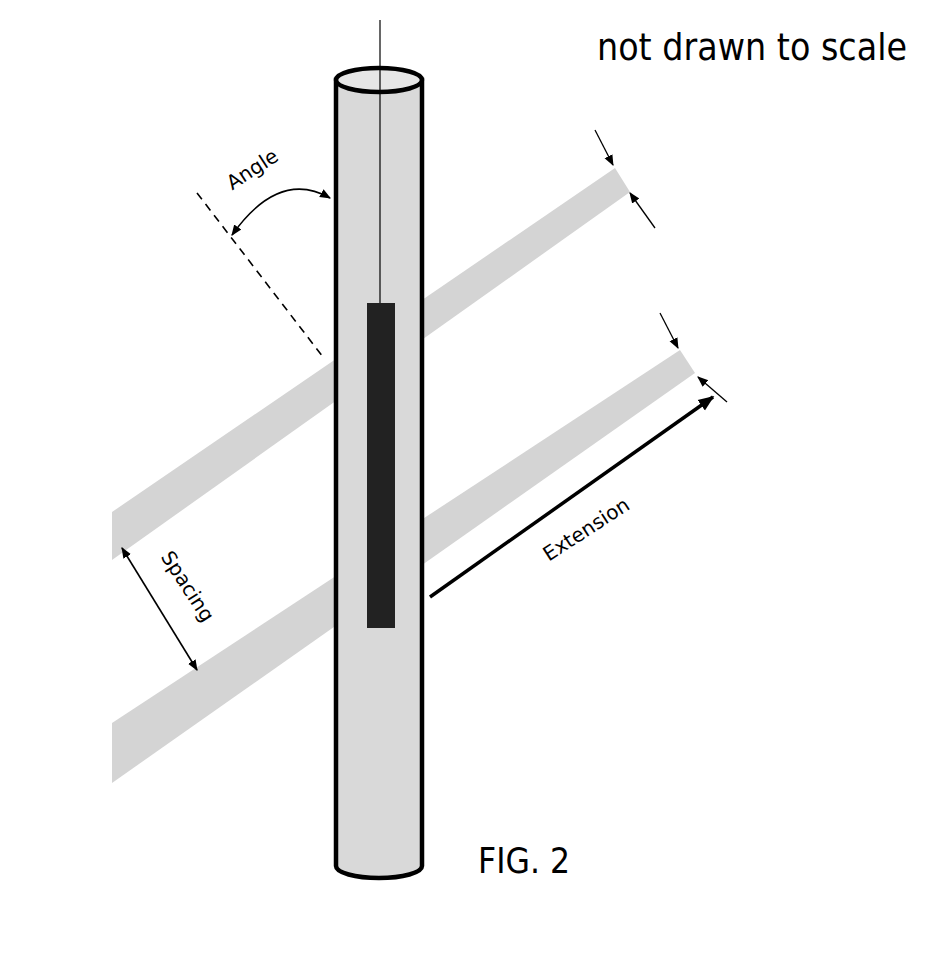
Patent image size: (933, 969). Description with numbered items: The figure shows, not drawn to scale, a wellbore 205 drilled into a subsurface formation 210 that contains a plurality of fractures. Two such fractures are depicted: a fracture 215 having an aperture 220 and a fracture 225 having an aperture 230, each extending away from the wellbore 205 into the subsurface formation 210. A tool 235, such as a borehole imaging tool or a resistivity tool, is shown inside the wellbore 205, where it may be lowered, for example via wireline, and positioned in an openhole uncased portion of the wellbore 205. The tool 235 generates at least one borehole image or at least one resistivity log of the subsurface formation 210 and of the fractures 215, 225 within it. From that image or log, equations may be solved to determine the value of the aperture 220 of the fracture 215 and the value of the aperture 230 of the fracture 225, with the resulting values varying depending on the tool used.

The wellbore 205 is at (425, 645).
The subsurface formation 210 is at (918, 723).
The fracture 215 is at (500, 298).
The aperture 220 is at (665, 165).
The fracture 225 is at (187, 733).
The aperture 230 is at (752, 337).
The tool 235 is at (395, 370).